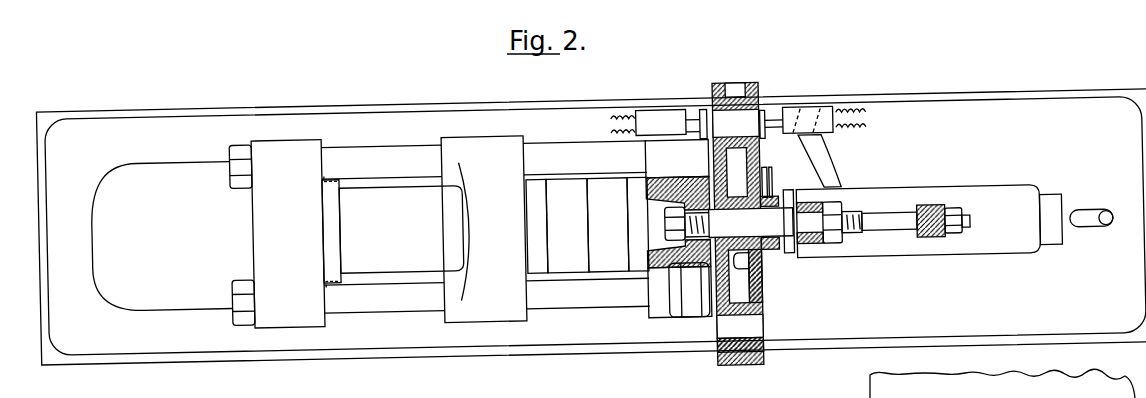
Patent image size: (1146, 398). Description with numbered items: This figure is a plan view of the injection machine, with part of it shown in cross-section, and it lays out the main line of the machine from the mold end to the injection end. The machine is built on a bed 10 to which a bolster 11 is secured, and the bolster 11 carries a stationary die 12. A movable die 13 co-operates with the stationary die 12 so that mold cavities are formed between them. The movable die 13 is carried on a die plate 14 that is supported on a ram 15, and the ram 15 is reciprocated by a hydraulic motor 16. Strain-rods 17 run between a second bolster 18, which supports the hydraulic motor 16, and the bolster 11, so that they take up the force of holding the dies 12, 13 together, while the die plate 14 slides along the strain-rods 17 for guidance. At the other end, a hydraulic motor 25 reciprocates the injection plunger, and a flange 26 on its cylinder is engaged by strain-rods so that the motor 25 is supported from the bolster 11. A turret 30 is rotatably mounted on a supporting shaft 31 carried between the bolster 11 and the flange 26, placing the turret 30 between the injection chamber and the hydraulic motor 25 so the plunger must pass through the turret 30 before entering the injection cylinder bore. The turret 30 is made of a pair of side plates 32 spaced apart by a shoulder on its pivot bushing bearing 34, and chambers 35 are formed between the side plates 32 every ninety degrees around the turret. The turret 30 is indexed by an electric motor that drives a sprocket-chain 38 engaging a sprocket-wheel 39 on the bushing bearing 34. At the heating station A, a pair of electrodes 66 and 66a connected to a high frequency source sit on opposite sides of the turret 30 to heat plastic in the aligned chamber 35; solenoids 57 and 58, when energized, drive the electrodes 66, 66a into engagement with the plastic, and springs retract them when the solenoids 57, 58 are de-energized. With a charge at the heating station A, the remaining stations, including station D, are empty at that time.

The bed 10 is at (174, 128).
The bolster 11 is at (677, 299).
The stationary die 12 is at (598, 239).
The movable die 13 is at (555, 227).
The die plate 14 is at (480, 189).
The ram 15 is at (388, 242).
The hydraulic motor 16 is at (166, 211).
The strain-rods 17 is at (388, 147).
The bolster 18 is at (280, 243).
The hydraulic motor 25 is at (1010, 204).
The flange 26 is at (812, 248).
The turret 30 is at (757, 155).
The supporting shaft 31 is at (755, 234).
The side plates 32 is at (727, 370).
The pivot bushing bearing 34 is at (762, 284).
The chambers 35 is at (762, 332).
The sprocket-chain 38 is at (767, 172).
The sprocket-wheel 39 is at (773, 191).
The solenoid 57 is at (668, 112).
The solenoid 58 is at (820, 112).
The electrode 66 is at (704, 113).
The electrode 66a is at (765, 114).
The heating station A is at (733, 123).
The station D is at (740, 326).